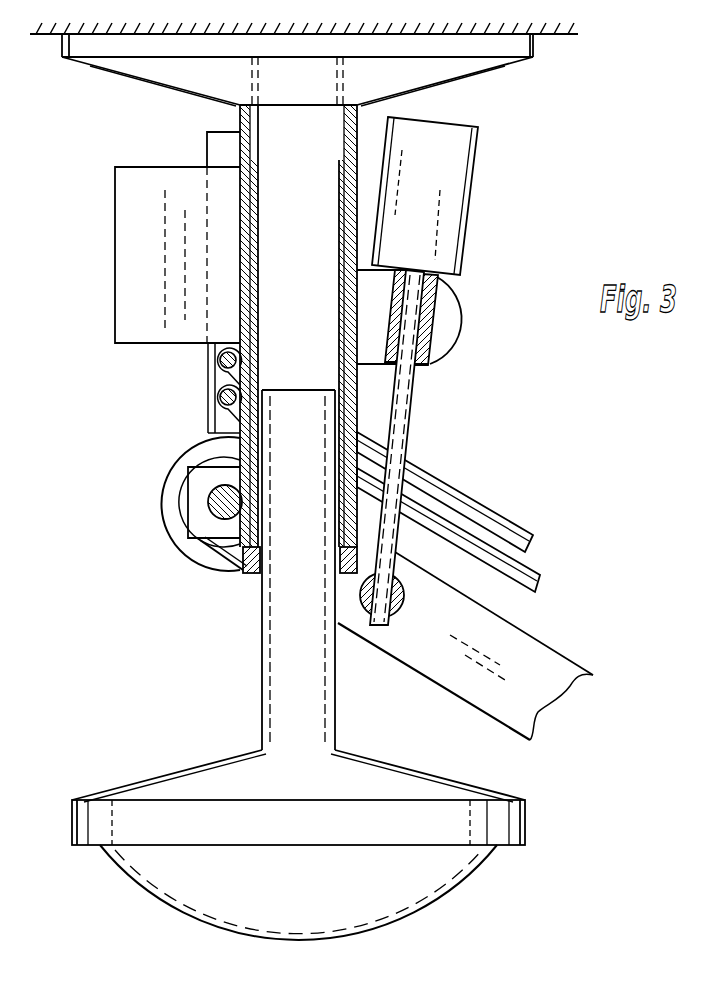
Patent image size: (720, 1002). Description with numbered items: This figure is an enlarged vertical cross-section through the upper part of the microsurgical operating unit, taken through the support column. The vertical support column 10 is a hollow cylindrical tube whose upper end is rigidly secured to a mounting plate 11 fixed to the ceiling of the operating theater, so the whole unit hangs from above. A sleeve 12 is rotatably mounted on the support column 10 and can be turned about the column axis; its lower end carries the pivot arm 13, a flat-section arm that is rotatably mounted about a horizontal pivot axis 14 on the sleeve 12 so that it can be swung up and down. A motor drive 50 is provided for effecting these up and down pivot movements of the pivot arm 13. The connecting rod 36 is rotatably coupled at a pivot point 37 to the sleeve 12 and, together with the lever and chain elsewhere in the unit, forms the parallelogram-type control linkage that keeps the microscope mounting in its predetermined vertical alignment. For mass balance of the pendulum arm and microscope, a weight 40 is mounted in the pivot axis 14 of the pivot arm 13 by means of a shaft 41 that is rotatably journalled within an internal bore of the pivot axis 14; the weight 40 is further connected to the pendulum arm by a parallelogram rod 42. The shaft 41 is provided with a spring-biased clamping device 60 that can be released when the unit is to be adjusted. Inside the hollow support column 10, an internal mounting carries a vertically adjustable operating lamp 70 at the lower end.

The vertical support column 10 is at (277, 125).
The mounting plate 11 is at (165, 84).
The sleeve 12 is at (360, 115).
The pivot arm 13 is at (430, 666).
The horizontal pivot axis 14 is at (208, 498).
The connecting rod 36 is at (543, 592).
The pivot point 37 is at (219, 398).
The weight 40 is at (120, 215).
The shaft 41 is at (213, 508).
The parallelogram rod 42 is at (515, 530).
The motor drive 50 is at (470, 162).
The clamping device 60 is at (177, 466).
The operating lamp 70 is at (162, 888).